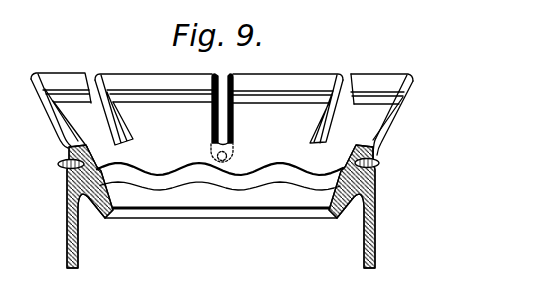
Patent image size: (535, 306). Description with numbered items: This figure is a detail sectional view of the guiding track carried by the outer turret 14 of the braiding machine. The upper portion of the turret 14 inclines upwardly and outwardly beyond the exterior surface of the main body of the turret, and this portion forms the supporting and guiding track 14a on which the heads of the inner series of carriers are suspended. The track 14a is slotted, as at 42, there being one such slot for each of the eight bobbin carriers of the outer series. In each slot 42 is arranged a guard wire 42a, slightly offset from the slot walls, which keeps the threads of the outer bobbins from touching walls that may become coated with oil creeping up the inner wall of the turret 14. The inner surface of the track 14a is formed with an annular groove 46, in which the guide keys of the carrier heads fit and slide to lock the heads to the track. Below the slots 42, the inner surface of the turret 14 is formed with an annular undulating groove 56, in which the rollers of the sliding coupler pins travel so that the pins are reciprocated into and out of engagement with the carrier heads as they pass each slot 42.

The outer turret 14 is at (373, 221).
The guiding track 14a is at (413, 77).
The slot 42 is at (346, 76).
The guard wire 42a is at (221, 80).
The annular groove 46 is at (367, 97).
The annular undulating groove 56 is at (258, 176).